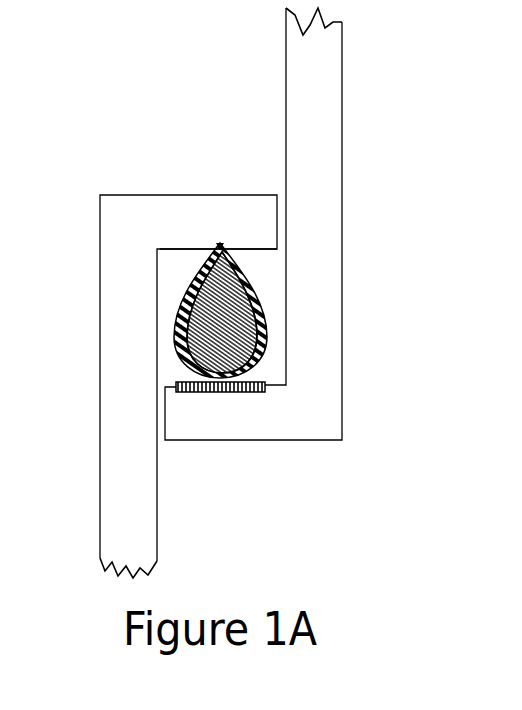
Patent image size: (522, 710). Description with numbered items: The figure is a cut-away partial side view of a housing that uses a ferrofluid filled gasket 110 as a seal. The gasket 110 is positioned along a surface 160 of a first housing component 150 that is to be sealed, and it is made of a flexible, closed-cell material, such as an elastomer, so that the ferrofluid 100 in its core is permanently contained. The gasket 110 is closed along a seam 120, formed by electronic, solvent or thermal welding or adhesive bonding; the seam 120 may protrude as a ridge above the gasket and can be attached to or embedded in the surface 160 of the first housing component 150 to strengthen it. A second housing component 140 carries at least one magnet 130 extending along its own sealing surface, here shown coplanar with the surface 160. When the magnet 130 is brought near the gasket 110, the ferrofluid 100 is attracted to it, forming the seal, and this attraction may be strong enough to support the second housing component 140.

The ferrofluid 100 is at (262, 317).
The ferrofluid filled gasket 110 is at (264, 287).
The seam 120 is at (218, 241).
The magnet 130 is at (238, 394).
The second housing component 140 is at (310, 178).
The first housing component 150 is at (127, 312).
The surface 160 is at (187, 242).